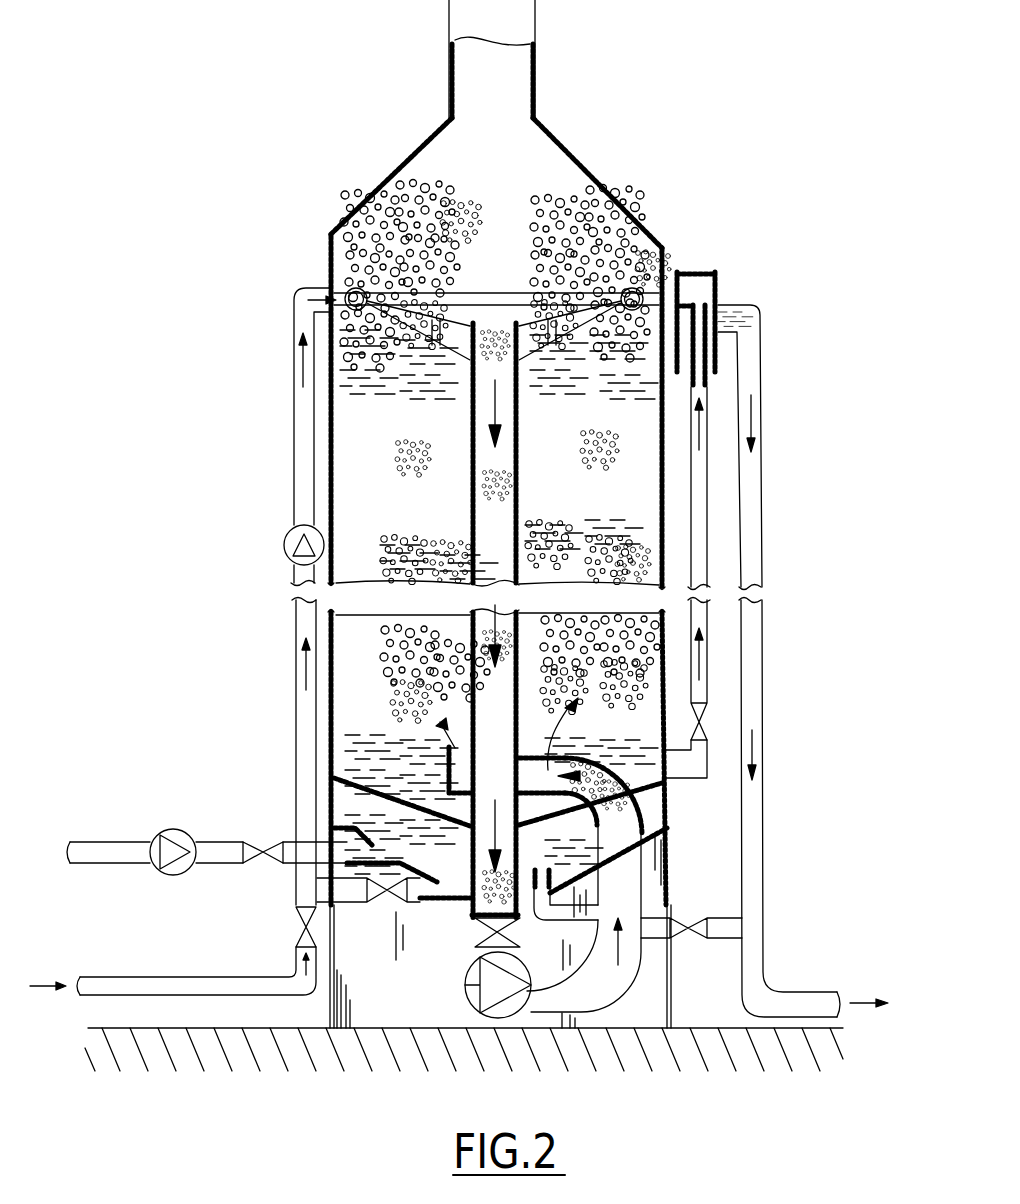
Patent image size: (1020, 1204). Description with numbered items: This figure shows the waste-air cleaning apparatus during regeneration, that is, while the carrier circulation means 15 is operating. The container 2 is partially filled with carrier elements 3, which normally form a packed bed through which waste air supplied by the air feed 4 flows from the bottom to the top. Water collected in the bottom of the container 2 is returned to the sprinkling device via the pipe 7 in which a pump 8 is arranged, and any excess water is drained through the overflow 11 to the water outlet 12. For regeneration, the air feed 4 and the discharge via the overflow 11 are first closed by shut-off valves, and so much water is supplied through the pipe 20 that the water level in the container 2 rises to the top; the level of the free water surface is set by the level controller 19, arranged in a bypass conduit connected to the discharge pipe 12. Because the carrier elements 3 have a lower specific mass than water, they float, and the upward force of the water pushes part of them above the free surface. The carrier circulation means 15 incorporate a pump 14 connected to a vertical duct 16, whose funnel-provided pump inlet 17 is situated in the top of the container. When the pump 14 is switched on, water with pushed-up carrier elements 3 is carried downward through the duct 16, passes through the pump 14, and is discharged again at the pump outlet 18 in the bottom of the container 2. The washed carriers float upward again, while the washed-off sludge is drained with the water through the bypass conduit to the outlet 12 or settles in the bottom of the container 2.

The container 2 is at (664, 258).
The carrier elements 3 is at (598, 235).
The air feed 4 is at (105, 853).
The pipe 7 is at (298, 470).
The pump 8 is at (296, 542).
The overflow 11 is at (531, 920).
The water outlet 12 is at (808, 1000).
The pump 14 is at (492, 980).
The carrier circulation means 15 is at (478, 1040).
The vertical duct 16 is at (474, 836).
The pump inlet 17 is at (483, 292).
The pump outlet 18 is at (582, 738).
The level controller 19 is at (728, 282).
The pipe 20 is at (164, 988).